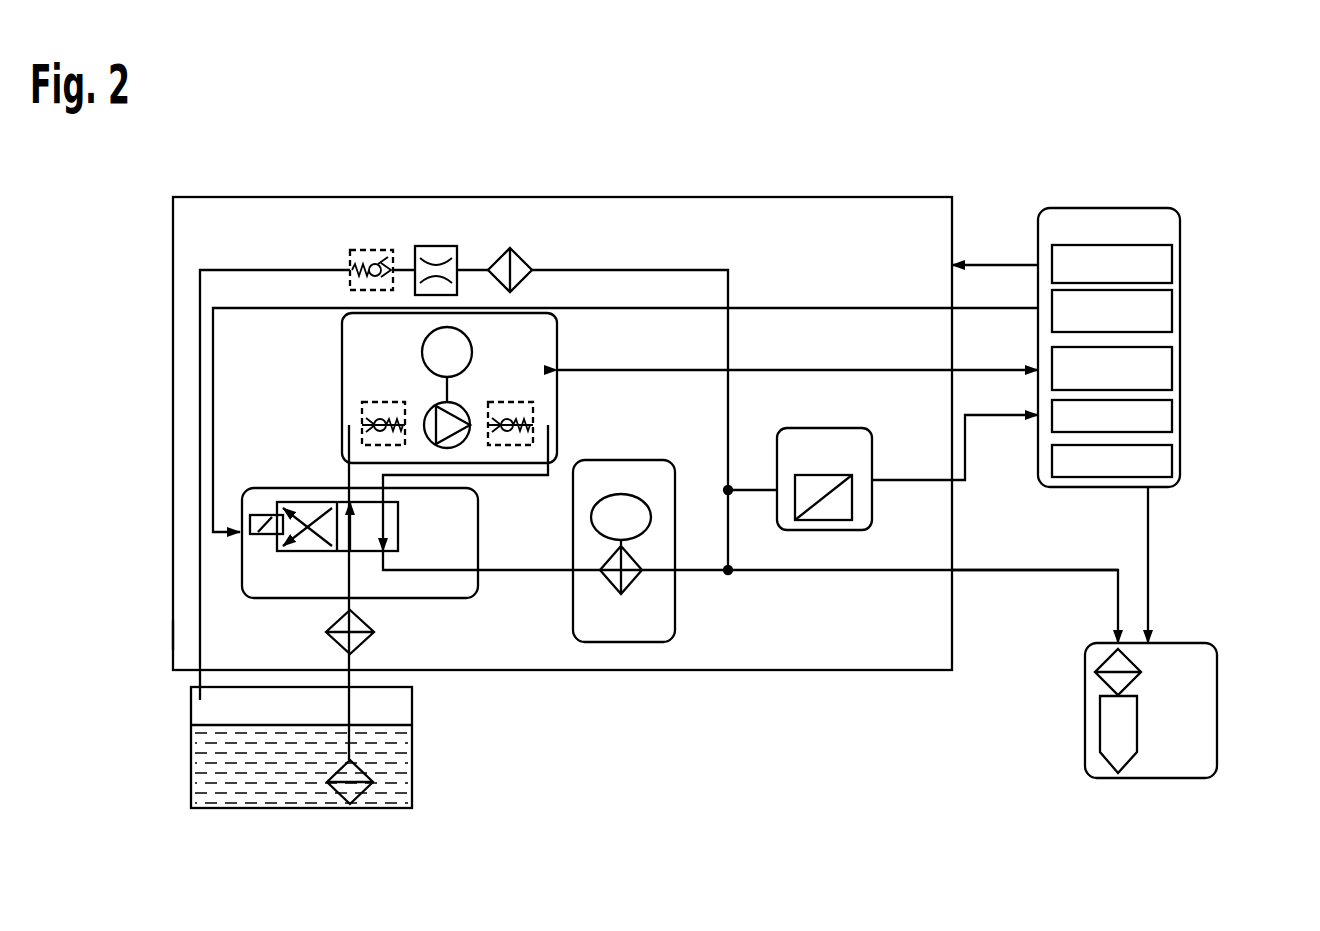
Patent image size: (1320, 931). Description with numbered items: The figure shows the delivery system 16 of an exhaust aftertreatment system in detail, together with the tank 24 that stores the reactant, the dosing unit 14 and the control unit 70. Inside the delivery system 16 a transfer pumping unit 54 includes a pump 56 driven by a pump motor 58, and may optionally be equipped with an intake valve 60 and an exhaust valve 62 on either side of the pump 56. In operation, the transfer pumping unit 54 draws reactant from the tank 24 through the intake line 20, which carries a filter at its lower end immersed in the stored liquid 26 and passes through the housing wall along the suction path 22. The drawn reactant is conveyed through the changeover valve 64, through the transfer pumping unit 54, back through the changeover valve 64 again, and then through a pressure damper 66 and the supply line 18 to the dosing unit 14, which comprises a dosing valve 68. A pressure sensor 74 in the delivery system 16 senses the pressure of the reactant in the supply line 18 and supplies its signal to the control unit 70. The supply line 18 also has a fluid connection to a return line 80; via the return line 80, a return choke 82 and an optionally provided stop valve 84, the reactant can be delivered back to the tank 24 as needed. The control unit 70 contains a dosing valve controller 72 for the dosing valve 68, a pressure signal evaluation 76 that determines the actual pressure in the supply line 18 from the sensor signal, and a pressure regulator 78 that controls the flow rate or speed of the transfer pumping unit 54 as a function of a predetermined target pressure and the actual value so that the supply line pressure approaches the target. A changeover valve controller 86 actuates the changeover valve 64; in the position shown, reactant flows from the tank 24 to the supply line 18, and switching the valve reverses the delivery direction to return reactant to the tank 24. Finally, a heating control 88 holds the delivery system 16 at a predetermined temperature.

The dosing unit 14 is at (1217, 710).
The delivery system 16 is at (884, 197).
The supply line 18 is at (1027, 572).
The intake line 20 is at (352, 743).
The suction line 22 is at (173, 634).
The tank 24 is at (191, 716).
The reducing agent / liquid 26 is at (215, 766).
The transfer pumping unit 54 is at (557, 338).
The pump 56 is at (431, 407).
The pump motor 58 is at (422, 352).
The intake valve 60 is at (362, 412).
The exhaust valve 62 is at (510, 402).
The changeover valve 64 is at (448, 600).
The pressure damper 66 is at (623, 642).
The dosing valve 68 is at (1100, 727).
The control unit 70 is at (1105, 208).
The dosing valve controller 72 is at (1172, 457).
The pressure sensor 74 is at (822, 530).
The pressure signal evaluation 76 is at (1172, 414).
The pressure regulator 78 is at (1172, 366).
The return line 80 is at (728, 405).
The return choke 82 is at (432, 246).
The stop valve 84 is at (367, 250).
The changeover valve controller 86 is at (1172, 308).
The heating control 88 is at (1172, 260).